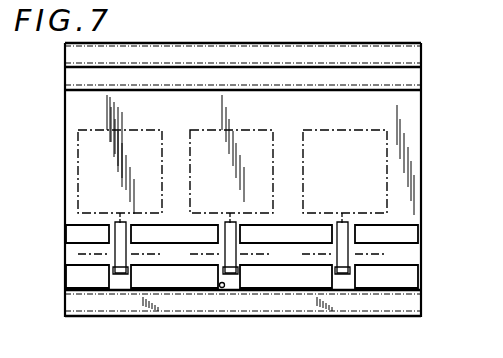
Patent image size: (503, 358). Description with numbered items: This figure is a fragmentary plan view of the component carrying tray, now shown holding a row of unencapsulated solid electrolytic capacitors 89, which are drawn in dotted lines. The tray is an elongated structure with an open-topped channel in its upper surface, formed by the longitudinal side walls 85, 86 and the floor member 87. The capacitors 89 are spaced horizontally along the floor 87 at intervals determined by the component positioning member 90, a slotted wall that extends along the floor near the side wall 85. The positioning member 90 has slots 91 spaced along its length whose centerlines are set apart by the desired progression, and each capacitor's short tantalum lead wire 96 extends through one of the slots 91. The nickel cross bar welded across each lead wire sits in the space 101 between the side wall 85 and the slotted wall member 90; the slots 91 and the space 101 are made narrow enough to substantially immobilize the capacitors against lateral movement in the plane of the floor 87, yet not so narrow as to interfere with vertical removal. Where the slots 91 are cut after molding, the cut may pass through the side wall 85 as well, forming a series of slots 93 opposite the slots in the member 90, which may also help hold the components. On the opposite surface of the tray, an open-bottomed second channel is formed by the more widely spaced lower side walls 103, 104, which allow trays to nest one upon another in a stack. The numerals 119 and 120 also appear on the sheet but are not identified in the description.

The lower side wall 104 is at (411, 52).
The side wall 86 is at (420, 79).
The floor member 87 is at (406, 201).
The capacitor components 89 is at (308, 148).
The lead wire 96 is at (231, 237).
The slots 91 is at (332, 226).
The component positioning member 90 is at (418, 232).
The space 101 is at (415, 257).
The side wall 85 is at (415, 283).
The lower side wall 103 is at (419, 317).
The slots 93 is at (224, 283).
The element 120 is at (375, 5).
The element 119 is at (449, 5).